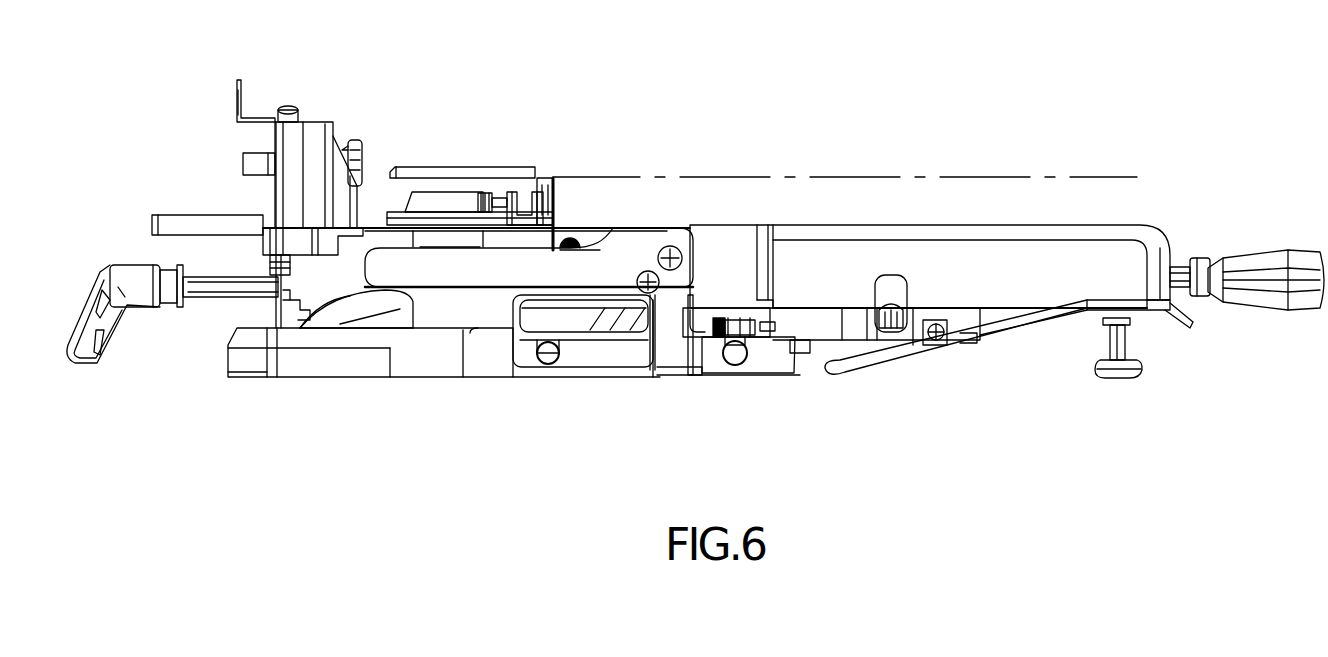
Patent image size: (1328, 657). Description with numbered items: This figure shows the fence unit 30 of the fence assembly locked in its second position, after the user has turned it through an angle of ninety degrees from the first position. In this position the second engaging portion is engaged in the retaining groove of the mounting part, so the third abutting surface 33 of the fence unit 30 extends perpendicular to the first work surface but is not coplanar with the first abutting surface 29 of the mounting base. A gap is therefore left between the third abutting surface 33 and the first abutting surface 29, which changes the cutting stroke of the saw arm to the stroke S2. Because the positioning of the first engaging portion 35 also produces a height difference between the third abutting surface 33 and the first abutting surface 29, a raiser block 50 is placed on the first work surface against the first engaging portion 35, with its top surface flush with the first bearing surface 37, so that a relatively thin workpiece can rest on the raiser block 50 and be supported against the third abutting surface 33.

The first abutting surface 29 is at (553, 205).
The fence unit 30 is at (425, 135).
The third abutting surface 33 is at (532, 177).
The first engaging portion 35 is at (543, 185).
The first bearing surface 37 is at (539, 177).
The raiser block 50 is at (1137, 177).
The cutting stroke S2 is at (1170, 243).